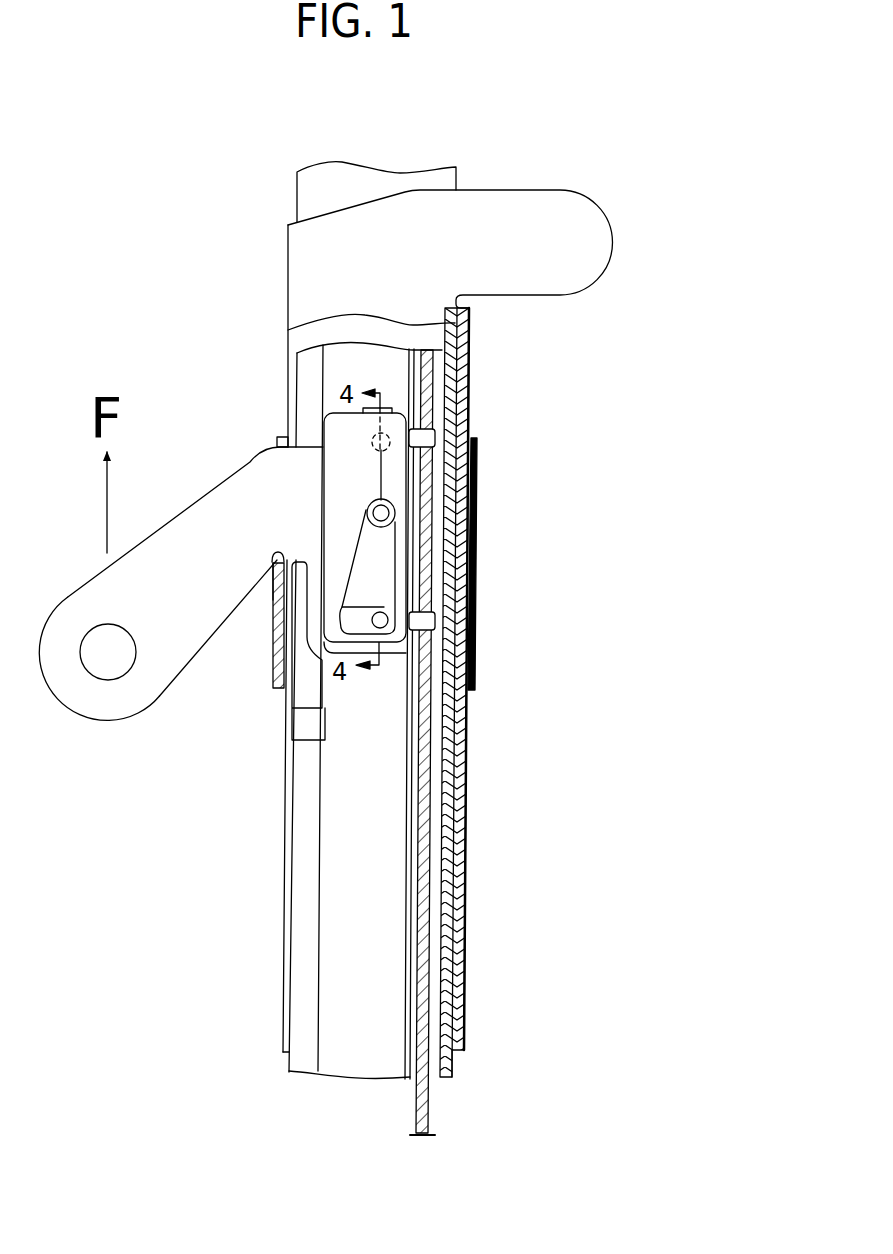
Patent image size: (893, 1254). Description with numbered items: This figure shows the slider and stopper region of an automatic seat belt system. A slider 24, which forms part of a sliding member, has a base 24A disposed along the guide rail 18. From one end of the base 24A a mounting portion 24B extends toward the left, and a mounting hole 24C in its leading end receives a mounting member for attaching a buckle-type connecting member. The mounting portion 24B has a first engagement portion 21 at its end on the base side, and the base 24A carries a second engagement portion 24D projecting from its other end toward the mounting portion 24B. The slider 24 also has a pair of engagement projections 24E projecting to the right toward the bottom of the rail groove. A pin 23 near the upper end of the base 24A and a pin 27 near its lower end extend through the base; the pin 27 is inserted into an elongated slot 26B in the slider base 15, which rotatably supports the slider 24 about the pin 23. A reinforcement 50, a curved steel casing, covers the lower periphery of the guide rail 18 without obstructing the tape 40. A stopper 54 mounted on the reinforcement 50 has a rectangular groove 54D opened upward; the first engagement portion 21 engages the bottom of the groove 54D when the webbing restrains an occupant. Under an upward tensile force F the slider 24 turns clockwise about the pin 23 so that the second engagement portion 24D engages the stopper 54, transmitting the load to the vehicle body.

The slider base 15 is at (315, 425).
The guide rail 18 is at (297, 1005).
The first engagement portion 21 is at (282, 556).
The pin 23 is at (377, 437).
The slider 24 is at (200, 476).
The base 24A is at (407, 650).
The mounting portion 24B is at (168, 673).
The mounting hole 24C is at (117, 676).
The second engagement portion 24D is at (300, 733).
The engagement projections 24E is at (435, 437).
The elongated slot 26B is at (322, 652).
The pin 27 is at (452, 684).
The tape 40 is at (415, 1115).
The reinforcement 50 is at (283, 933).
The stopper 54 is at (277, 667).
The rectangular groove 54D is at (263, 566).